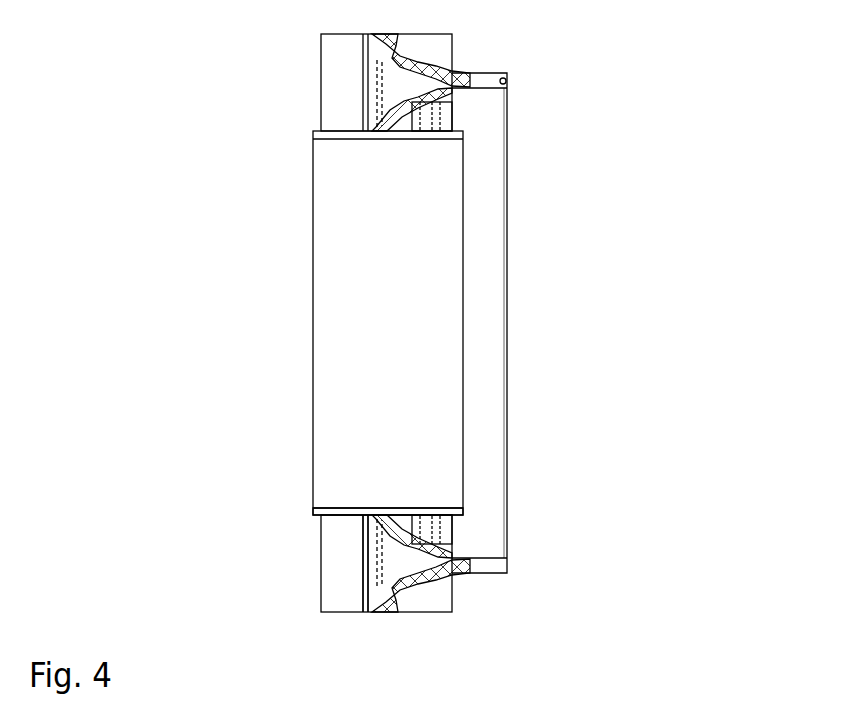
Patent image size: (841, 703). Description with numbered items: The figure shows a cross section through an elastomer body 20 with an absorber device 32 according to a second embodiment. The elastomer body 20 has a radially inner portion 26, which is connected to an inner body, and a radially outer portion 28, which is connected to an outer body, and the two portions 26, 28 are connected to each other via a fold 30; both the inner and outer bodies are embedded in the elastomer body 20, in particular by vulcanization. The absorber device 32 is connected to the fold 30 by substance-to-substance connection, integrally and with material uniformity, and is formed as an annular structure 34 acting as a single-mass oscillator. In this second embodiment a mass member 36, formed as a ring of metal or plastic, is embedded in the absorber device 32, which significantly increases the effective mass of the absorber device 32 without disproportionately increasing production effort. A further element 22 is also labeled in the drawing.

The elastomer body 20 is at (556, 52).
The shaft 22 is at (493, 697).
The radially inner portion 26 is at (318, 508).
The radially outer portion 28 is at (331, 610).
The fold 30 is at (425, 579).
The absorber device 32 is at (524, 202).
The annular structure 34 is at (477, 76).
The mass member 36 is at (506, 82).